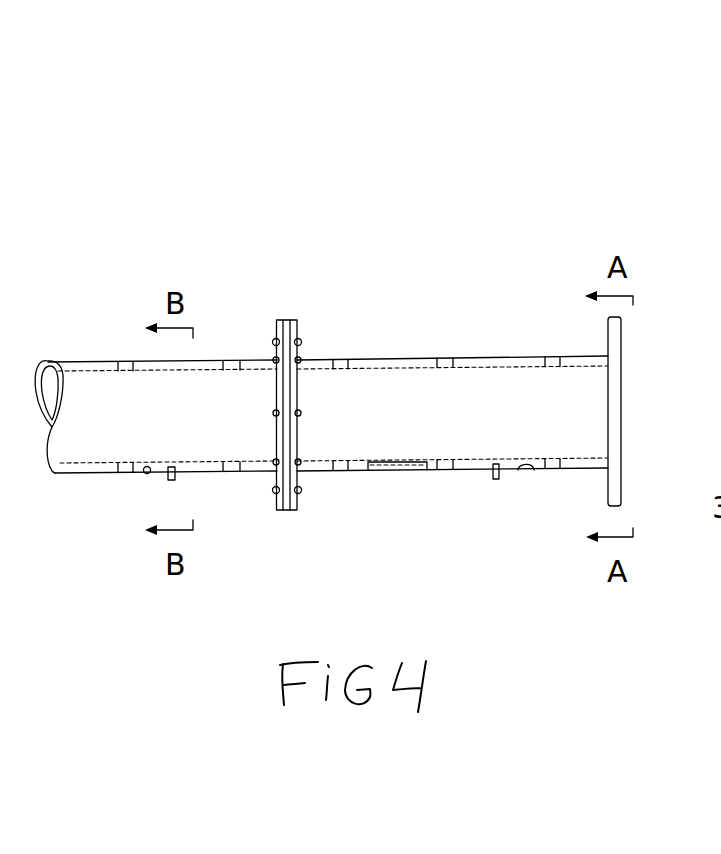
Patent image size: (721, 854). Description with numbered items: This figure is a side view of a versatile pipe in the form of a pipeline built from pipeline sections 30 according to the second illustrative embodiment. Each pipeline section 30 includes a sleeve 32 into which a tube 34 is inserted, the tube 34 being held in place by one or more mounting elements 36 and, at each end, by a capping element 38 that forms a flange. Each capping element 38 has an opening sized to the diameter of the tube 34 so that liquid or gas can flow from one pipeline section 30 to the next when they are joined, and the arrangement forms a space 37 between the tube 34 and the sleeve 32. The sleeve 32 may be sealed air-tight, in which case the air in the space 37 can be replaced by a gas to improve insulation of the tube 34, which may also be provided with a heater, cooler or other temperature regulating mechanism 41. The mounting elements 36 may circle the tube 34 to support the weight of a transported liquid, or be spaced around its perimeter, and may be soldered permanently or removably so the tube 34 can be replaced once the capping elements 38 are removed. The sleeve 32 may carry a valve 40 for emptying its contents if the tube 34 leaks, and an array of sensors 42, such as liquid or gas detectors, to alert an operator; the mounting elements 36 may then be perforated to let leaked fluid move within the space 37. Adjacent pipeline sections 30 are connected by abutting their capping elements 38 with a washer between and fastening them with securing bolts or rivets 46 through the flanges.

The pipeline section 30 is at (177, 245).
The sleeve 32 is at (100, 361).
The tube 34 is at (85, 473).
The mounting elements 36 is at (231, 362).
The space 37 is at (393, 352).
The capping element 38 is at (291, 320).
The valve 40 is at (175, 478).
The temperature regulating mechanism 41 is at (398, 471).
The sensors 42 is at (146, 474).
The securing bolts or rivets 46 is at (300, 341).